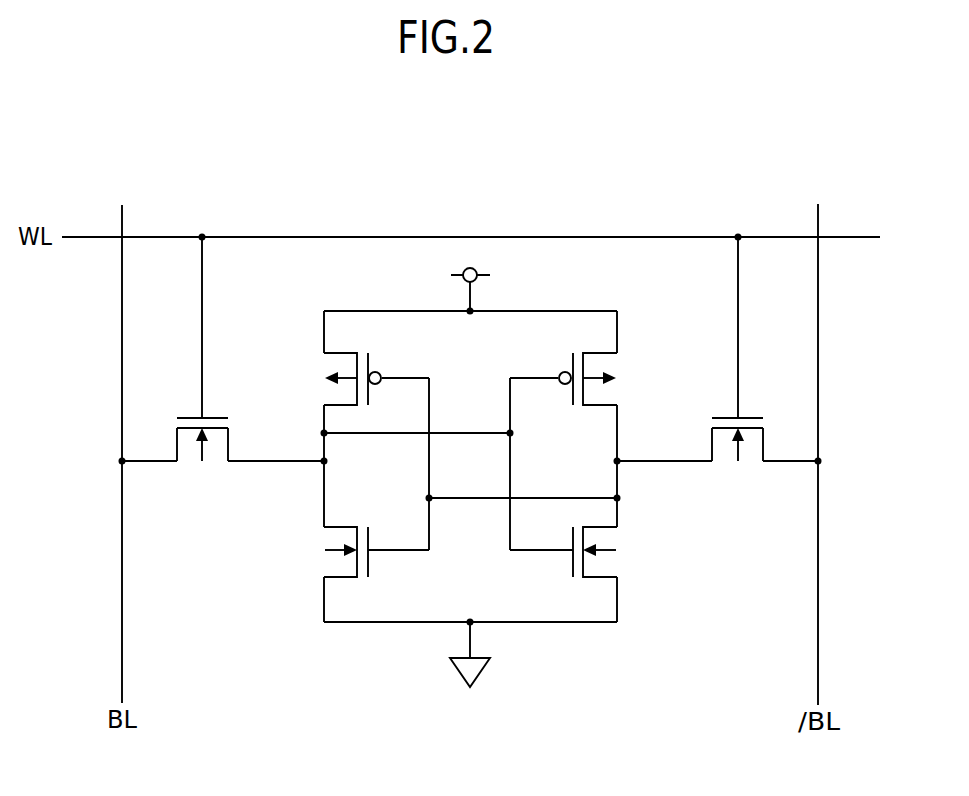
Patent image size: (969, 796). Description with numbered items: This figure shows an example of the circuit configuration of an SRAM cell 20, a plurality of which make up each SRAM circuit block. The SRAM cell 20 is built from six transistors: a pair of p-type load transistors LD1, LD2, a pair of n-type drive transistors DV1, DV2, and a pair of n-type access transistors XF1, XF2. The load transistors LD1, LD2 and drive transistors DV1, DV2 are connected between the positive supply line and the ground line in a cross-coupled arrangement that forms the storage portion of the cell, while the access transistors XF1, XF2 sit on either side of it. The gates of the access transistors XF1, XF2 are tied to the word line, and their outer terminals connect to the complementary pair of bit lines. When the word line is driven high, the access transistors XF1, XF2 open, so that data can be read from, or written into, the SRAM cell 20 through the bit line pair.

The SRAM cell 20 is at (529, 212).
The load transistor LD1 is at (327, 352).
The load transistor LD2 is at (606, 352).
The drive transistor DV1 is at (334, 572).
The drive transistor DV2 is at (607, 572).
The access transistor XF1 is at (227, 449).
The access transistor XF2 is at (713, 449).